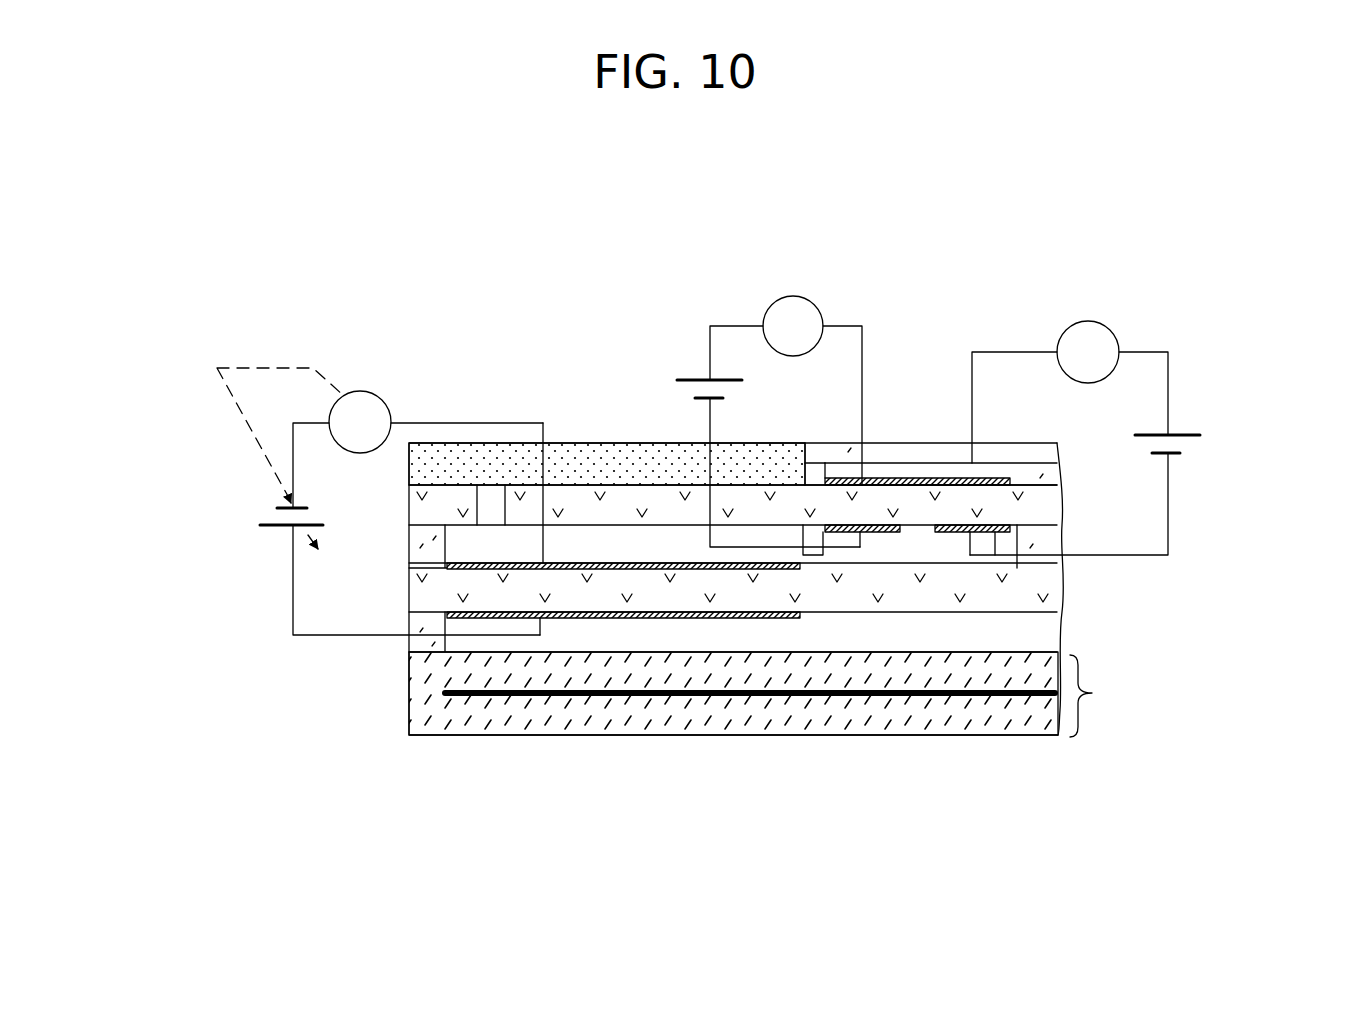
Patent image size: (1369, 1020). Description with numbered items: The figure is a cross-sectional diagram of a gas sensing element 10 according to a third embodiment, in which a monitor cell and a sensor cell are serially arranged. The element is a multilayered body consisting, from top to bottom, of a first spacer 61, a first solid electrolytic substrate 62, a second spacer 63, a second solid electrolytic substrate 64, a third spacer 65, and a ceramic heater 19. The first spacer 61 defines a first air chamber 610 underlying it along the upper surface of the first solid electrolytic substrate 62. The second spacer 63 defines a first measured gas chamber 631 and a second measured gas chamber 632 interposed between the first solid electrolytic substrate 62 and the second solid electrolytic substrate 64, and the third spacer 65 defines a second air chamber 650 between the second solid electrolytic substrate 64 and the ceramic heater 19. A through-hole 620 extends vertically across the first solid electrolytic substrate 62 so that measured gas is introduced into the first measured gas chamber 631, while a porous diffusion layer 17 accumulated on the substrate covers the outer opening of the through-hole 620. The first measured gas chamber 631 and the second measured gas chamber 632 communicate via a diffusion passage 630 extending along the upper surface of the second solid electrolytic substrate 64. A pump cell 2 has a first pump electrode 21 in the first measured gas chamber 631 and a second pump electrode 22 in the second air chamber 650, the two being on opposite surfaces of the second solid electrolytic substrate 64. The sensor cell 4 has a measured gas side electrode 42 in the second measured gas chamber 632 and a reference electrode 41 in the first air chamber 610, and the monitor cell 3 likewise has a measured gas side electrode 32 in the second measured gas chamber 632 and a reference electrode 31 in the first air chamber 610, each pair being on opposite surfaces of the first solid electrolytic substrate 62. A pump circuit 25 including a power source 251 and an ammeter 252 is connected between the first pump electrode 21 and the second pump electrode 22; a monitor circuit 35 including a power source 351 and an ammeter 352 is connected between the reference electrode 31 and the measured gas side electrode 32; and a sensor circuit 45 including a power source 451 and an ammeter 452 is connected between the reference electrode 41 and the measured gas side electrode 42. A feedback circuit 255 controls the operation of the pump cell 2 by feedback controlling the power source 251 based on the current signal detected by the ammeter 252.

The semiconductor device 10 is at (1080, 225).
The porous diffusion layer 17 is at (617, 462).
The ceramic heater 19 is at (776, 694).
The pump cell 2 is at (568, 549).
The first pump electrode 21 is at (687, 568).
The second pump electrode 22 is at (757, 618).
The pump circuit 25 is at (318, 637).
The power source 251 is at (268, 525).
The ammeter 252 is at (360, 391).
The feedback circuit 255 is at (270, 368).
The monitor cell 3 is at (878, 472).
The reference electrode 31 is at (915, 478).
The measured gas side electrode 32 is at (878, 532).
The monitor circuit 35 is at (745, 326).
The power source 351 is at (690, 378).
The ammeter 352 is at (798, 296).
The sensor cell 4 is at (944, 472).
The reference electrode 41 is at (995, 478).
The measured gas side electrode 42 is at (995, 555).
The sensor circuit 45 is at (1168, 522).
The power source 451 is at (1178, 435).
The ammeter 452 is at (1108, 327).
The first spacer 61 is at (1037, 450).
The first air chamber 610 is at (1037, 474).
The first solid electrolytic substrate 62 is at (432, 505).
The through-hole 620 is at (492, 498).
The second spacer 63 is at (428, 552).
The diffusion passage 630 is at (812, 560).
The first measured gas chamber 631 is at (610, 545).
The second measured gas chamber 632 is at (925, 553).
The second solid electrolytic substrate 64 is at (425, 595).
The third spacer 65 is at (430, 643).
The second air chamber 650 is at (563, 633).